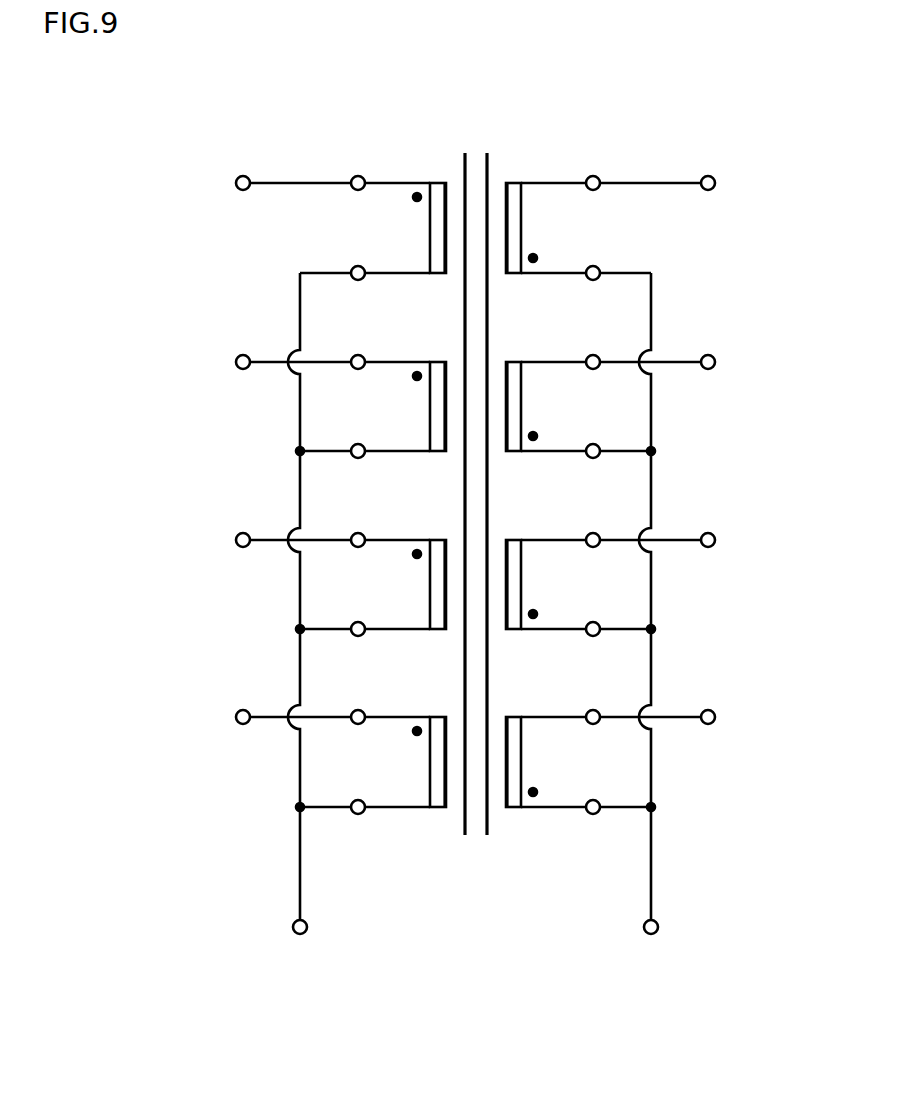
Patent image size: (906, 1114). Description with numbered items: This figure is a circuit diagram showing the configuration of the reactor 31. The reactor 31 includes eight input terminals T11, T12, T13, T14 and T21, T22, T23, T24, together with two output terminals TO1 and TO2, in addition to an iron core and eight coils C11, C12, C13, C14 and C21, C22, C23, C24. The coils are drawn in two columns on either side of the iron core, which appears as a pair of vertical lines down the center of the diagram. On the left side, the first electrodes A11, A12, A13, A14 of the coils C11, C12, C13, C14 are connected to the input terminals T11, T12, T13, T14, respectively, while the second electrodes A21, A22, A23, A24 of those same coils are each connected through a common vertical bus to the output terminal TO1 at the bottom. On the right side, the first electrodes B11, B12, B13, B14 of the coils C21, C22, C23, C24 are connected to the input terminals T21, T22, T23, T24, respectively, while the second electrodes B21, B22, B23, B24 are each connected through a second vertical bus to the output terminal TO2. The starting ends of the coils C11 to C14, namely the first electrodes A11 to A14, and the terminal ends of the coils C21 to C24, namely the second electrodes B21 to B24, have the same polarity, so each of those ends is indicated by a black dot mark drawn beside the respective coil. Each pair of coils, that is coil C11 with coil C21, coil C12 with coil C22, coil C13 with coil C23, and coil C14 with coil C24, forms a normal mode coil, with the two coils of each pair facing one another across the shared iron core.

The reactor 31 is at (250, 97).
The input terminal T11 is at (236, 183).
The input terminal T12 is at (236, 362).
The input terminal T13 is at (236, 540).
The input terminal T14 is at (236, 717).
The input terminal T21 is at (715, 184).
The input terminal T22 is at (715, 363).
The input terminal T23 is at (715, 541).
The input terminal T24 is at (715, 718).
The first electrode A11 is at (358, 175).
The first electrode A12 is at (358, 354).
The first electrode A13 is at (358, 532).
The first electrode A14 is at (358, 709).
The second electrode A21 is at (358, 265).
The second electrode A22 is at (358, 443).
The second electrode A23 is at (358, 621).
The second electrode A24 is at (358, 799).
The first electrode B11 is at (593, 175).
The first electrode B12 is at (593, 354).
The first electrode B13 is at (593, 532).
The first electrode B14 is at (593, 709).
The second electrode B21 is at (593, 265).
The second electrode B22 is at (593, 443).
The second electrode B23 is at (593, 621).
The second electrode B24 is at (593, 799).
The coil C11 is at (437, 180).
The coil C12 is at (437, 359).
The coil C13 is at (437, 537).
The coil C14 is at (437, 714).
The coil C21 is at (515, 180).
The coil C22 is at (515, 359).
The coil C23 is at (515, 537).
The coil C24 is at (515, 714).
The output terminal TO1 is at (300, 935).
The output terminal TO2 is at (651, 935).